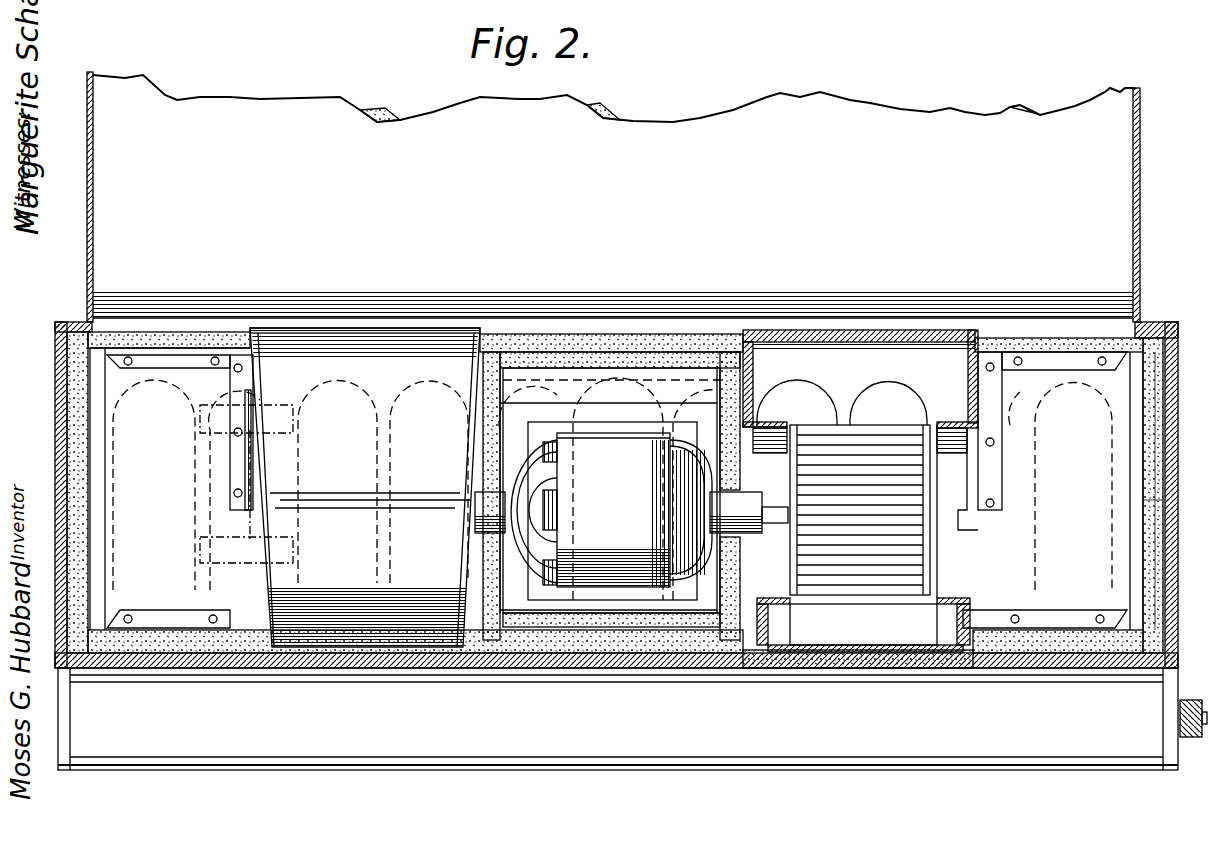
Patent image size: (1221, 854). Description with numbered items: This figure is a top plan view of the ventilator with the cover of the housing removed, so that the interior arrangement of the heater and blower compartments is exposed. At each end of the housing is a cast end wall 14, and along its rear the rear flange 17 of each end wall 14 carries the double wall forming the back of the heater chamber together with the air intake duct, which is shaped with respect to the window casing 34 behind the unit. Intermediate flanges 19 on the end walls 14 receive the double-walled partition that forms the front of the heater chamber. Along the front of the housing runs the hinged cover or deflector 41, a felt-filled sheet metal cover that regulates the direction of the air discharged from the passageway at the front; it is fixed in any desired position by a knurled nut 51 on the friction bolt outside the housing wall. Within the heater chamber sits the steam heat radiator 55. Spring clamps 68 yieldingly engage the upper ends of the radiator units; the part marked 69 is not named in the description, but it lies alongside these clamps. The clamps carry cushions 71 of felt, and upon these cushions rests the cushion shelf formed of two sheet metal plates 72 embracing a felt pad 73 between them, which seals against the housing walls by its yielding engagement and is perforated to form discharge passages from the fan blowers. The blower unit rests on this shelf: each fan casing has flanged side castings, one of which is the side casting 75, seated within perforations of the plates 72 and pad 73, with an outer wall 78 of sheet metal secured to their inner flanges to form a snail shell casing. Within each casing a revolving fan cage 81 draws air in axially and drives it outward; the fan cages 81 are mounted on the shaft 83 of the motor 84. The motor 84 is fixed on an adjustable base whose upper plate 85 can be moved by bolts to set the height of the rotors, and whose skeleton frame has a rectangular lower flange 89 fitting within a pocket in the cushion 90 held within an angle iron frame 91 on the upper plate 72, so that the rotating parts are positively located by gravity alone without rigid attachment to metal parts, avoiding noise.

The end wall 14 is at (57, 408).
The rear flange 17 is at (1168, 325).
The intermediate flange 19 is at (1160, 597).
The window casing 34 is at (613, 197).
The hinged cover or deflector 41 is at (218, 735).
The knurled nut 51 is at (1196, 706).
The steam heat radiator 55 is at (205, 553).
The spring clamp 68 is at (220, 423).
The rod 69 is at (245, 573).
The cushion 71 is at (1180, 535).
The sheet metal plate 72 is at (990, 470).
The felt pad 73 is at (540, 348).
The side casting 75 is at (975, 345).
The outer wall 78 is at (888, 340).
The fan cage 81 is at (890, 462).
The shaft 83 is at (762, 575).
The motor 84 is at (620, 530).
The upper plate 85 is at (572, 405).
The rectangular lower flange 89 is at (648, 384).
The cushion 90 is at (687, 360).
The angle iron frame 91 is at (613, 375).